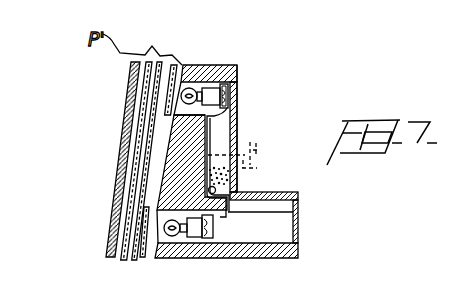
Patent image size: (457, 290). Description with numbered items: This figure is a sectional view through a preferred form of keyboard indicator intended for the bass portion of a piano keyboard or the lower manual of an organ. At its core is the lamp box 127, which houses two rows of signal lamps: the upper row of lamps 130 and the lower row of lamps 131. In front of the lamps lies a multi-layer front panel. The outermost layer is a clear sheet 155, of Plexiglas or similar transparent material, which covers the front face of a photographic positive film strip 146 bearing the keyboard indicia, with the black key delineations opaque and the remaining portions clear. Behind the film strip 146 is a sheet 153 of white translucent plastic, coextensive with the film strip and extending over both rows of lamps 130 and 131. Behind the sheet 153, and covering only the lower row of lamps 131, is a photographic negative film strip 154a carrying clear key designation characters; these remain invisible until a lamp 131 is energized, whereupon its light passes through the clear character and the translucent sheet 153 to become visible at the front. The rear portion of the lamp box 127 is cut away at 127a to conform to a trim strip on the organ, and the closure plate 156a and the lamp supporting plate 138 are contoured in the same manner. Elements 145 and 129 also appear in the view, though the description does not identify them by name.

The lamp 130 is at (185, 64).
The clear sheet 155 is at (124, 114).
The photographic positive film strip 146 is at (143, 130).
The sheet of white translucent plastic 153 is at (143, 170).
The photographic negative film strip 154a is at (148, 228).
The lamp box 127 is at (173, 172).
The cut-away portion 127a is at (243, 93).
The closure plate 156a is at (238, 74).
The lamp supporting plate 138 is at (207, 132).
The switch (phantom) 145 is at (252, 163).
The lower housing 129 is at (267, 233).
The lamp 131 is at (172, 240).